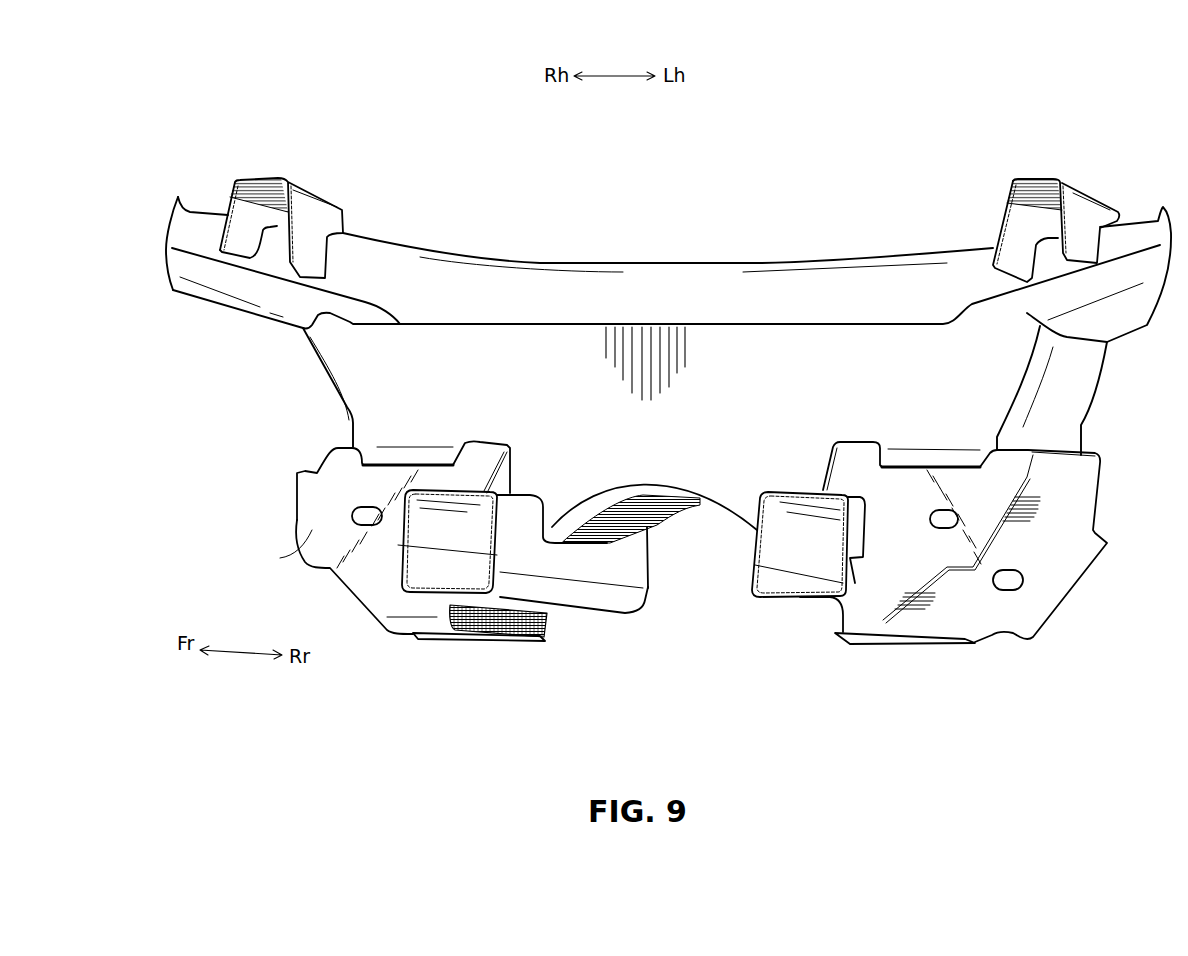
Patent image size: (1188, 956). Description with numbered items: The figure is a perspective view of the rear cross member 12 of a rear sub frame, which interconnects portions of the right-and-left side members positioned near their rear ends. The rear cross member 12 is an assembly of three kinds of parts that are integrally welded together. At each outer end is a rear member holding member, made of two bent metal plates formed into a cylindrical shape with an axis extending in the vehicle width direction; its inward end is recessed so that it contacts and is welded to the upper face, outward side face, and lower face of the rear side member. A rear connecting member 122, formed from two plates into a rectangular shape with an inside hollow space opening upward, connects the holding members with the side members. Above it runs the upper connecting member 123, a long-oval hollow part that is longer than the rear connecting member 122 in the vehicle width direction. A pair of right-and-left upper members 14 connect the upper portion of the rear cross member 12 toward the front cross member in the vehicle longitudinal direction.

The rear cross member 12 is at (706, 253).
The upper member 14 is at (323, 184).
The rear connecting member 122 is at (383, 382).
The upper connecting member 123 is at (830, 275).